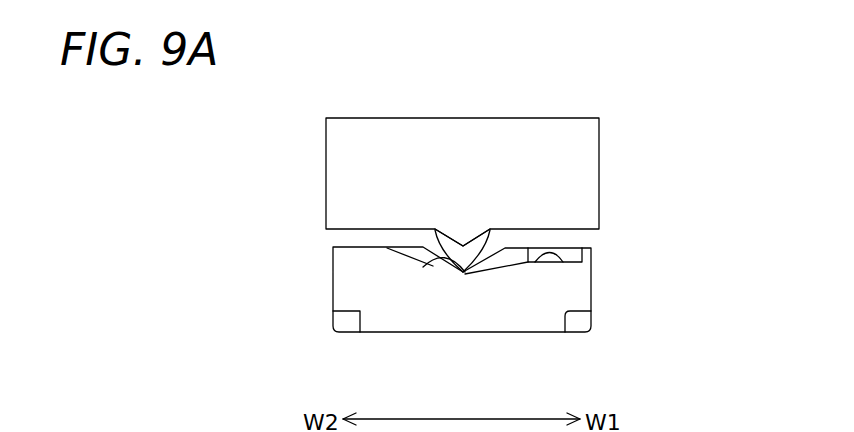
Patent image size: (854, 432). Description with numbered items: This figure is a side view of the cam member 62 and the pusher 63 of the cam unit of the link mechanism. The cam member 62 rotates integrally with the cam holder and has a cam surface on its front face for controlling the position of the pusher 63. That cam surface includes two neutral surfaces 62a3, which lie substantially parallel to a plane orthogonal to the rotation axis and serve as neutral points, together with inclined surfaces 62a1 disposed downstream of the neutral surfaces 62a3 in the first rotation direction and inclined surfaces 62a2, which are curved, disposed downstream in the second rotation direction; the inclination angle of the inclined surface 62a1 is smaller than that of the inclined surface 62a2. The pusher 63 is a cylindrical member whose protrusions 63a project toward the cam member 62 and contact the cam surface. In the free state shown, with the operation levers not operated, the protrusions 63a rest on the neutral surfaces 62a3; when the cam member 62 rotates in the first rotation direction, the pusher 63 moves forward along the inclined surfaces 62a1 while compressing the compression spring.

The pusher 63 is at (612, 178).
The protrusion 63a is at (472, 253).
The cam member 62 is at (326, 270).
The inclined surface 62a1 is at (565, 264).
The inclined surface 62a2 is at (403, 248).
The neutral surface 62a3 is at (430, 262).